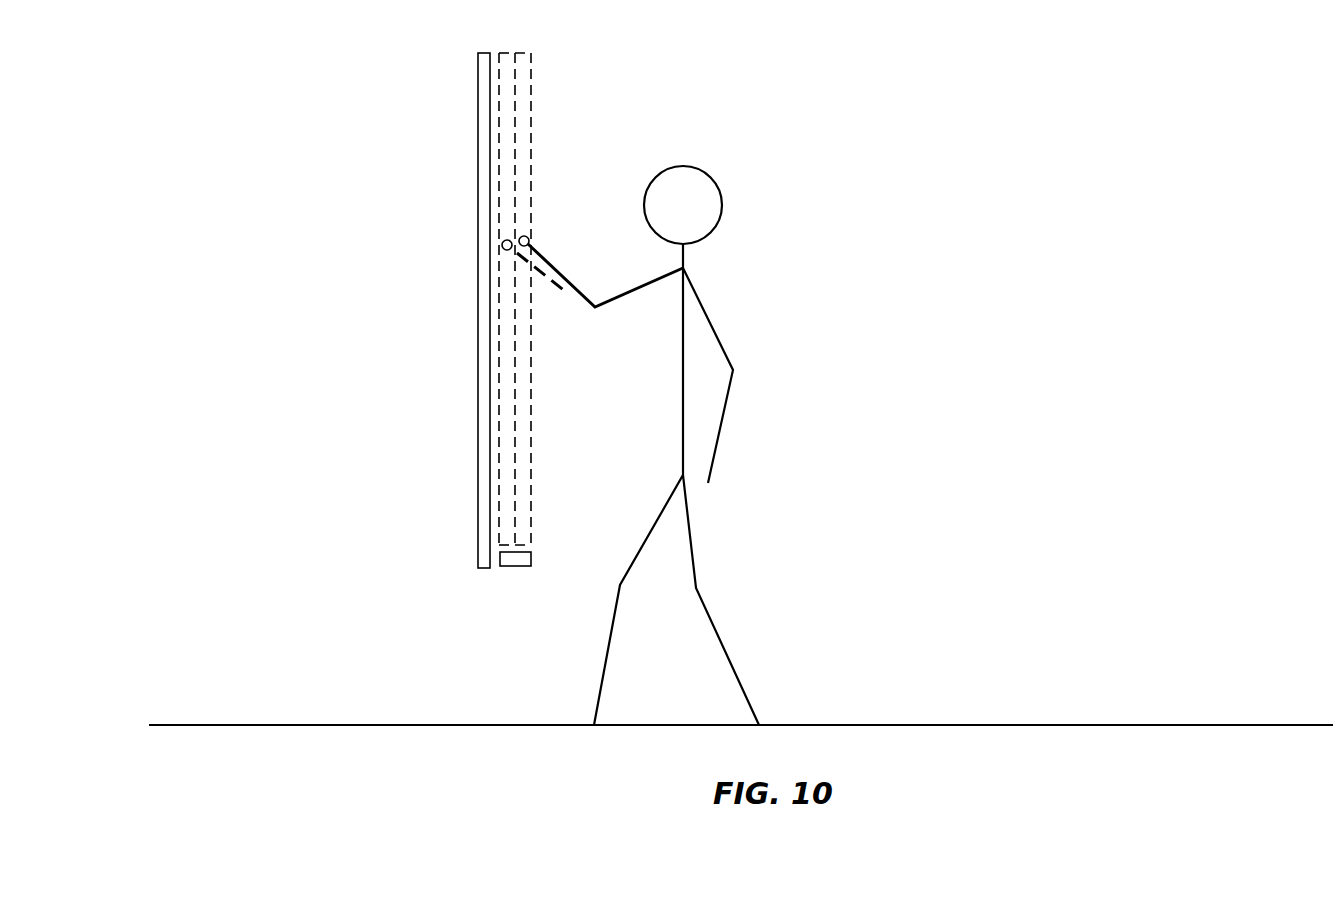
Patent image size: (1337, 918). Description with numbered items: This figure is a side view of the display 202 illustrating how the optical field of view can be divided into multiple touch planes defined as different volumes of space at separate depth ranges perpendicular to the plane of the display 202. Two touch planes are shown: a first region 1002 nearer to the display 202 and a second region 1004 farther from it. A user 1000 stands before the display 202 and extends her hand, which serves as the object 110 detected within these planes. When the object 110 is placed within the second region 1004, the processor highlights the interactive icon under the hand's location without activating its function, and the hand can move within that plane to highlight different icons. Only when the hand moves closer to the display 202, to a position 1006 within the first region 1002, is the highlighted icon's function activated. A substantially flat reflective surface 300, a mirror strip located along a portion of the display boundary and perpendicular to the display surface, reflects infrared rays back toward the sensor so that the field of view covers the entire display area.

The display 202 is at (485, 175).
The first region 1002 is at (507, 312).
The second region 1004 is at (518, 350).
The position 1006 is at (504, 241).
The object 110 is at (528, 237).
The reflective surface 300 is at (508, 558).
The user 1000 is at (700, 300).